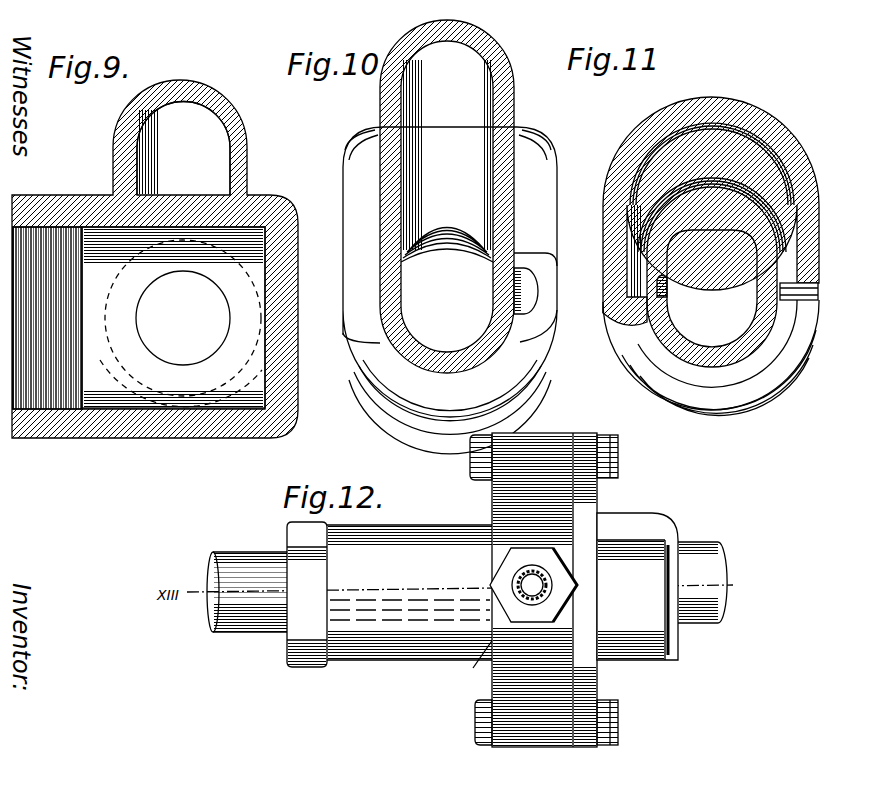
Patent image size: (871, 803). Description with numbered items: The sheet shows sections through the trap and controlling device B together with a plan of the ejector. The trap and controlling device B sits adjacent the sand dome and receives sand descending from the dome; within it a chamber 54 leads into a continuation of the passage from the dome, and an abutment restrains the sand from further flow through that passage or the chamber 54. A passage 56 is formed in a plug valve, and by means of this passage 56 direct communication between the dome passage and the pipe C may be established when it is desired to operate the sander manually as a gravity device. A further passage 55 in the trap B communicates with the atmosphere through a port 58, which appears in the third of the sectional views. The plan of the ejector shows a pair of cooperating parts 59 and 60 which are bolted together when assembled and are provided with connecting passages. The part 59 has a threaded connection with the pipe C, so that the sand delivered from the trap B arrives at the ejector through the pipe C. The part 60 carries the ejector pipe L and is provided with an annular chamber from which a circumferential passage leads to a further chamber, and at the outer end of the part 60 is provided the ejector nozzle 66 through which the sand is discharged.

In FIG. 9, the trap and controlling device B is at (155, 259).
In FIG. 10, the trap and controlling device B is at (450, 274).
In FIG. 11, the trap and controlling device B is at (711, 256).
In FIG. 9, the chamber 54 is at (187, 117).
In FIG. 10, the chamber 54 is at (397, 97).
In FIG. 10, the passage 55 is at (515, 278).
In FIG. 11, the passage 55 is at (662, 279).
In FIG. 9, the passage 56 is at (181, 323).
In FIG. 10, the passage 56 is at (447, 285).
In FIG. 11, the passage 56 is at (712, 277).
In FIG. 11, the port 58 is at (818, 288).
In FIG. 12, the part 59 is at (657, 513).
In FIG. 12, the part 60 is at (388, 653).
In FIG. 12, the ejector nozzle 66 is at (248, 628).
In FIG. 12, the ejector pipe L is at (542, 577).
In FIG. 12, the pipe C is at (713, 552).